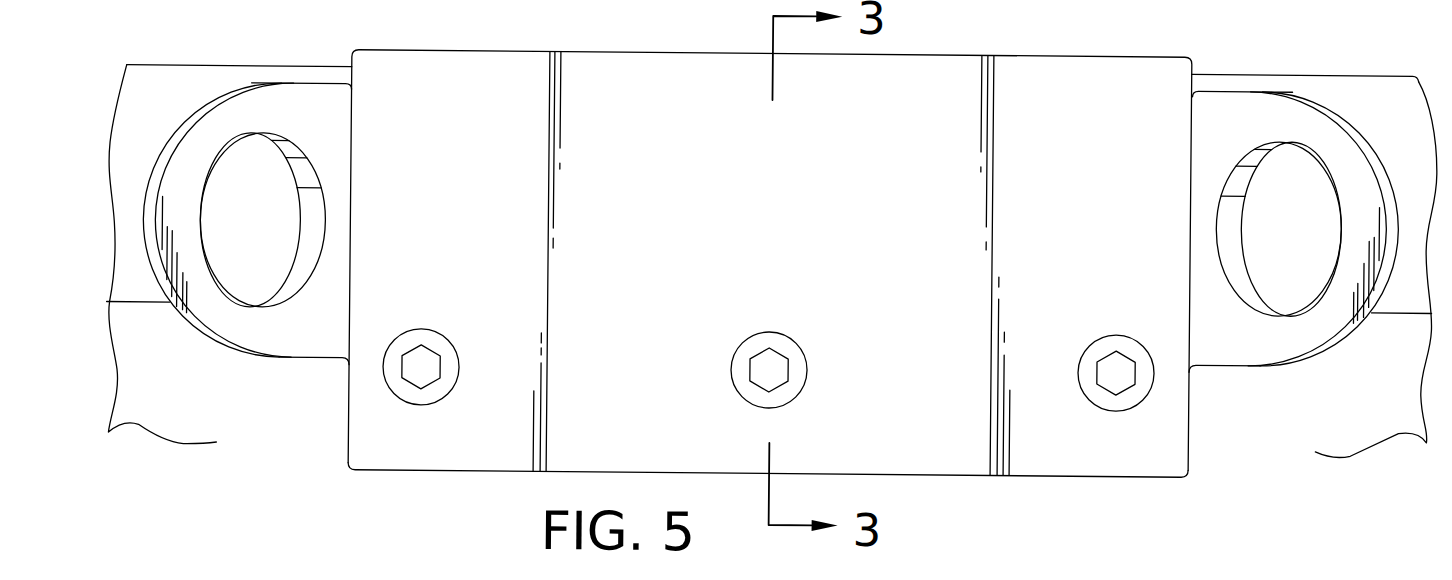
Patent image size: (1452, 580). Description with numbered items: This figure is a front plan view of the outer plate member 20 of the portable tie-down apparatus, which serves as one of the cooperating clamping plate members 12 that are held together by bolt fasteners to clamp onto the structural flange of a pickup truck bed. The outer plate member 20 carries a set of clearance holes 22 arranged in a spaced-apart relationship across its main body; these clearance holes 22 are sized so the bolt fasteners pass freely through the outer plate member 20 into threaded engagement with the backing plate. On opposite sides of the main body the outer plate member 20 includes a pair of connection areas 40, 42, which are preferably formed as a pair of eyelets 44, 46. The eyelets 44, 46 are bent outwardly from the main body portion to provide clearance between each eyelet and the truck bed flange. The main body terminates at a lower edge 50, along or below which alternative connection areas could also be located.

The clamping plate member 12 is at (310, 392).
The outer plate member 20 is at (786, 222).
The clearance holes 22 is at (440, 331).
The connection area 40 is at (220, 357).
The connection area 42 is at (1317, 358).
The eyelet 44 is at (258, 124).
The eyelet 46 is at (1269, 124).
The lower edge 50 is at (1083, 473).